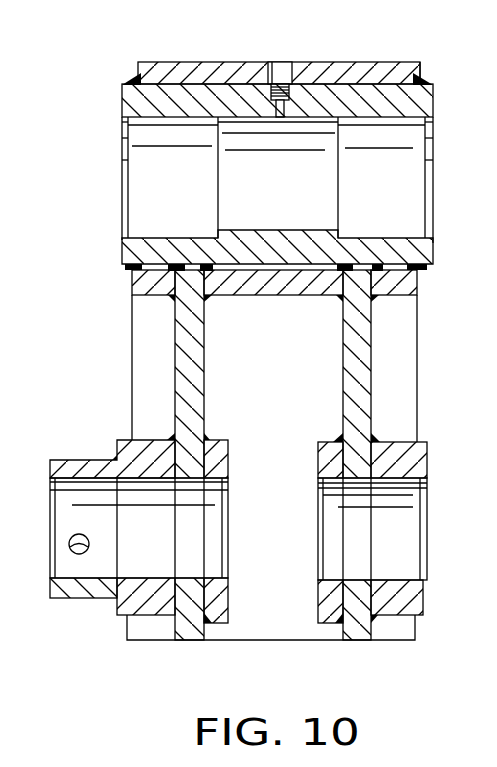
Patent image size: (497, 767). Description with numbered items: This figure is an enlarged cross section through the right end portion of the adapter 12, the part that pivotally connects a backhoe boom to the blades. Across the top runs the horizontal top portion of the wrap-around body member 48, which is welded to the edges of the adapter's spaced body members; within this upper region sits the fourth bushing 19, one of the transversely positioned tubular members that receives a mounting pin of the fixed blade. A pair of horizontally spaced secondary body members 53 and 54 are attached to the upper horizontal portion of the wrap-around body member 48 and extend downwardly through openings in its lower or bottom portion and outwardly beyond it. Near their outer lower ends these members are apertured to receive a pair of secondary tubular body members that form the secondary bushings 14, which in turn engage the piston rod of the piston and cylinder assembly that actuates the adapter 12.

The adapter 12 is at (114, 335).
The secondary bushings 14 is at (118, 600).
The fourth bushing 19 is at (122, 103).
The wrap-around body member 48 is at (335, 63).
The secondary body member 53 is at (367, 328).
The secondary body member 54 is at (203, 377).